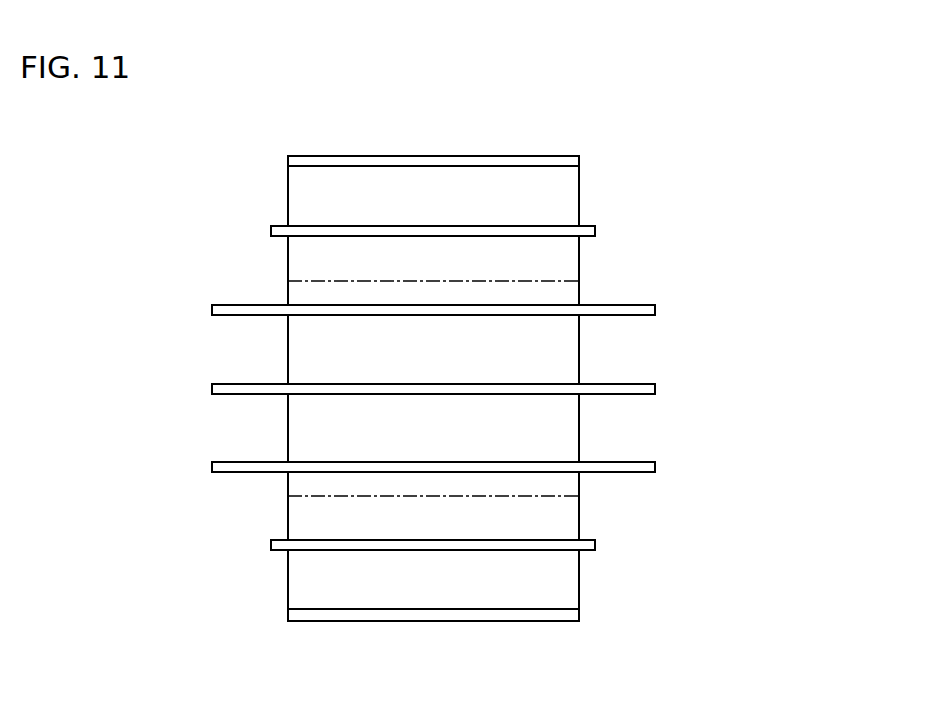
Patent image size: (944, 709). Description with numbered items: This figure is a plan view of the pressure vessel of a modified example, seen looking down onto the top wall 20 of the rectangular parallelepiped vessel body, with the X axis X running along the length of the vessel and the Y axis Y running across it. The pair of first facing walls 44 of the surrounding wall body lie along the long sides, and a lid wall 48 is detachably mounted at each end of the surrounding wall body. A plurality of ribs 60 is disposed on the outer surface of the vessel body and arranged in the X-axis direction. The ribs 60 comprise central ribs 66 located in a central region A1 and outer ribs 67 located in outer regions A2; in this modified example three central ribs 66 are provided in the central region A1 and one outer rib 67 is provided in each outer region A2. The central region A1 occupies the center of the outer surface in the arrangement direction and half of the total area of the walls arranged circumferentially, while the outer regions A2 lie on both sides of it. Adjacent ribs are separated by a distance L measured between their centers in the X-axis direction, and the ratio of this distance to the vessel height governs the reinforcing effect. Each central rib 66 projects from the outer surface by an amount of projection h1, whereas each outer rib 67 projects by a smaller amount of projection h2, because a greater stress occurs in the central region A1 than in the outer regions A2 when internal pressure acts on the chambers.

The top wall 20 is at (373, 202).
The first facing wall 44 is at (580, 187).
The lid wall 48 is at (420, 154).
The rib 60 is at (524, 388).
The central rib 66 is at (656, 309).
The outer rib 67 is at (596, 230).
The central region A1 is at (288, 421).
The outer region A2 is at (288, 176).
The amount of projection of central rib h1 is at (288, 290).
The amount of projection of outer rib h2 is at (317, 207).
The distance between adjacent ribs L is at (235, 316).
The X-axis direction X is at (872, 617).
The Y-axis direction Y is at (872, 617).